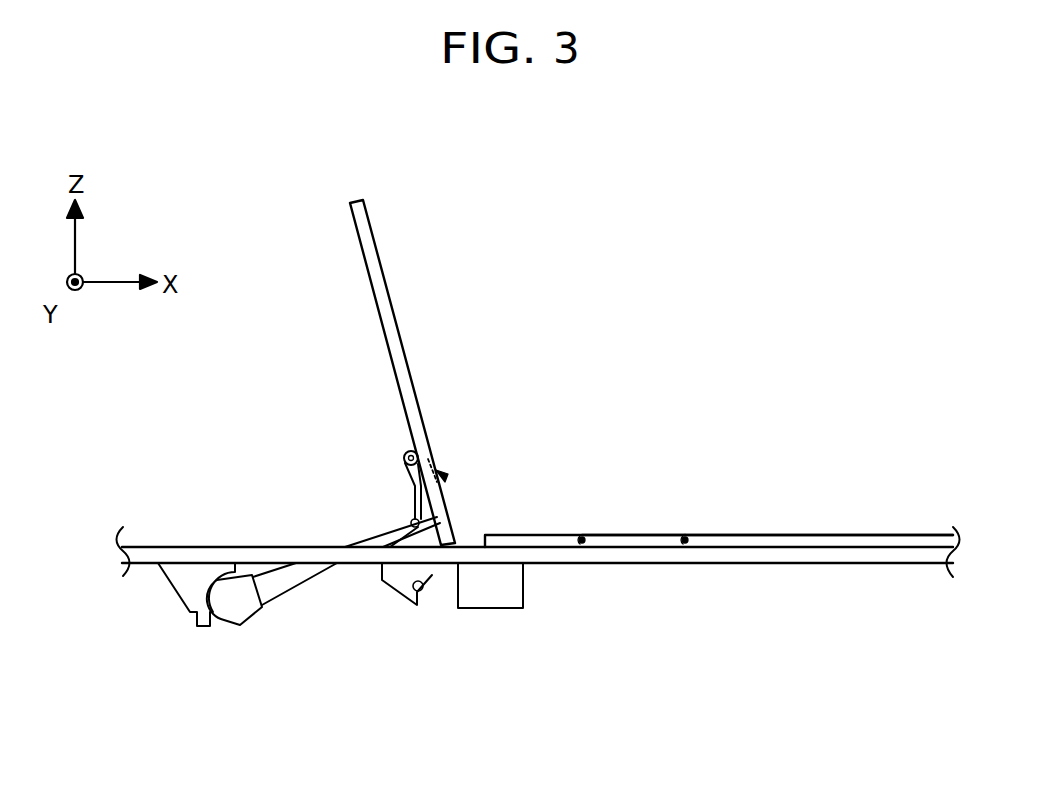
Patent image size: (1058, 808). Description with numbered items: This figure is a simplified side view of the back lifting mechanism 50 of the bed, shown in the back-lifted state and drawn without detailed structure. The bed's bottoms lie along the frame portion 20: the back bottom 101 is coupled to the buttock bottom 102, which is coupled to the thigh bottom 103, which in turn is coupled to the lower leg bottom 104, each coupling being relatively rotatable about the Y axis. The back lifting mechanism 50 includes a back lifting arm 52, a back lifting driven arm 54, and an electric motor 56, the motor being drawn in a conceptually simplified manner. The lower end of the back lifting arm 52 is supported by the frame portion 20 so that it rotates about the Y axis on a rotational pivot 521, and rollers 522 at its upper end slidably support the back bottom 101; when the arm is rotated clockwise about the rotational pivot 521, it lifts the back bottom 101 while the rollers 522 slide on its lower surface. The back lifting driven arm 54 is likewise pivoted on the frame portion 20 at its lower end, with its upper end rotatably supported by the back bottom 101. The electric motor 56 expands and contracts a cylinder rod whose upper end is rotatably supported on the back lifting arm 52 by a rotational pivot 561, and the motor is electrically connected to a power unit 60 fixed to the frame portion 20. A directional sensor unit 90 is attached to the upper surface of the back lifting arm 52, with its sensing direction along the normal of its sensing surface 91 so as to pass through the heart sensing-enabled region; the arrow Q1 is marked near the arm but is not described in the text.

The frame portion 20 is at (772, 555).
The back lifting mechanism 50 is at (340, 371).
The back lifting arm 52 is at (412, 491).
The back lifting driven arm 54 is at (421, 533).
The electric motor 56 is at (282, 580).
The power unit 60 is at (485, 592).
The sensor unit 90 is at (445, 480).
The sensing surface 91 is at (436, 472).
The back bottom 101 is at (373, 257).
The buttock bottom 102 is at (551, 540).
The thigh bottom 103 is at (642, 540).
The lower leg bottom 104 is at (853, 540).
The rotational pivot 521 is at (418, 591).
The rollers 522 is at (404, 453).
The rotational pivot 561 is at (408, 521).
The rotation direction Q1 is at (462, 419).